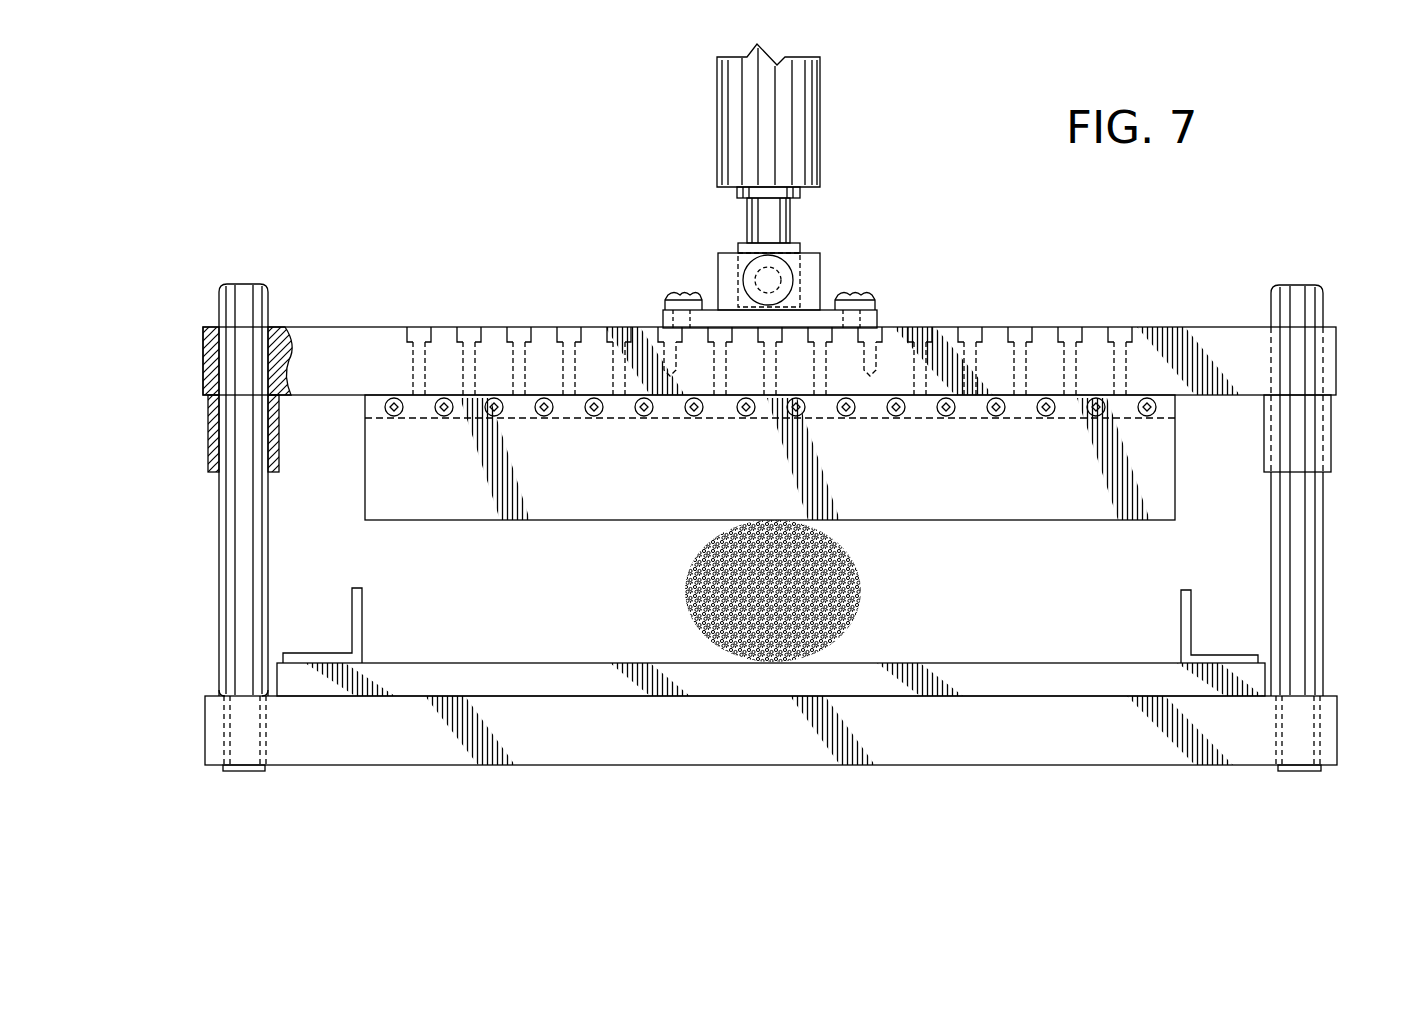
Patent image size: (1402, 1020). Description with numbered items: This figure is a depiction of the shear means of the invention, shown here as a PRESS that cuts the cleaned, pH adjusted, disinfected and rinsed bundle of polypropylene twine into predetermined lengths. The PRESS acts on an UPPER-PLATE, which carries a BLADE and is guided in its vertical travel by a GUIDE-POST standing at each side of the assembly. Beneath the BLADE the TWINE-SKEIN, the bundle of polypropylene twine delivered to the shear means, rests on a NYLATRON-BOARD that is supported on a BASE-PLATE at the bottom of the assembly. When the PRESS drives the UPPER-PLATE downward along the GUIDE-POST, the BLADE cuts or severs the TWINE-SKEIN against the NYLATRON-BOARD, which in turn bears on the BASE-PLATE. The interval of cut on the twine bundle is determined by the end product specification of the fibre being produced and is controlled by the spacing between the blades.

The press PRESS is at (565, 290).
The upper plate UPPER-PLATE is at (441, 327).
The guide post GUIDE-POST is at (217, 587).
The blade BLADE is at (452, 520).
The twine skein TWINE-SKEIN is at (863, 593).
The nylatron board NYLATRON-BOARD is at (1067, 682).
The base plate BASE-PLATE is at (387, 765).